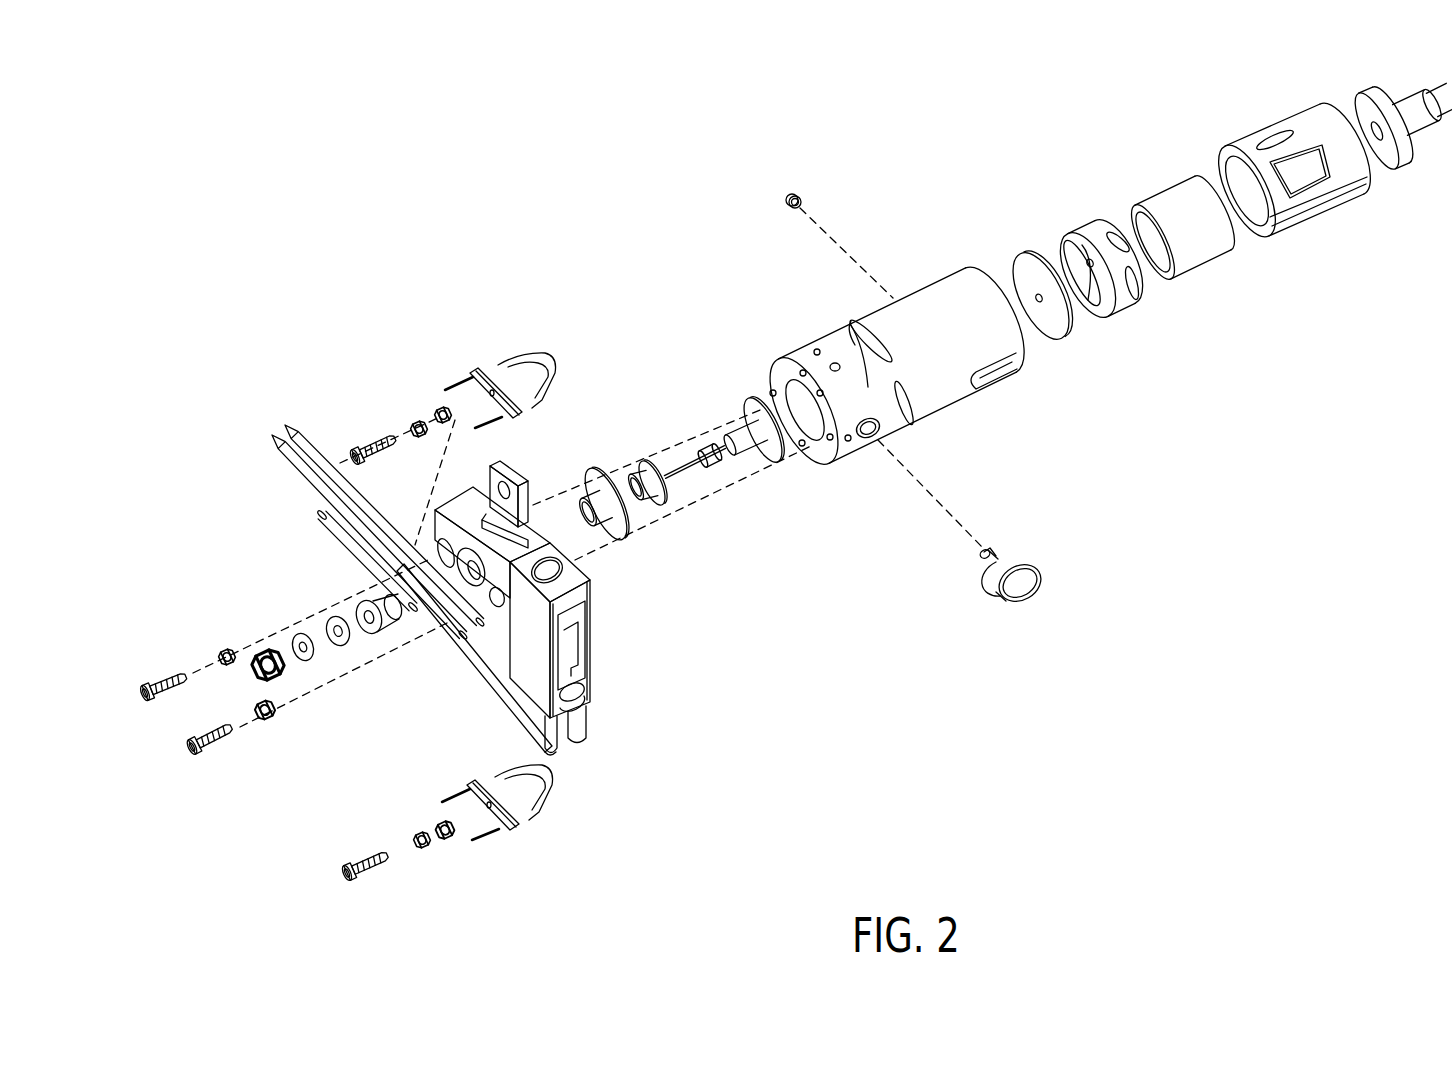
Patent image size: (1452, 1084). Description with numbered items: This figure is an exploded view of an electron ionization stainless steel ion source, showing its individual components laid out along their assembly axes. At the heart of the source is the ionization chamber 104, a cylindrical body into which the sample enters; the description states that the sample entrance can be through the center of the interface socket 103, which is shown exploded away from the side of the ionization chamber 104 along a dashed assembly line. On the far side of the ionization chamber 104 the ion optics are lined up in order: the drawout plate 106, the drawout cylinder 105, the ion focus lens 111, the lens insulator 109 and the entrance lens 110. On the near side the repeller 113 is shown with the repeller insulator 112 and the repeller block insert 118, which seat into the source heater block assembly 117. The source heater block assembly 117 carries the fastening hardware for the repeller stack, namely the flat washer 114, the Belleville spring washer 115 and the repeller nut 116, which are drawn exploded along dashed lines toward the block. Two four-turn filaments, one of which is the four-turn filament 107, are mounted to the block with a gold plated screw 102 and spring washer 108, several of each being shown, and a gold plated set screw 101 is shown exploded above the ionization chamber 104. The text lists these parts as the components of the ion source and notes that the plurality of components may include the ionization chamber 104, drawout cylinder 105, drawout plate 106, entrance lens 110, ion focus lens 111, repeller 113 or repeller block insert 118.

The gold plated set screw 101 is at (788, 198).
The gold plated screw 102 is at (360, 447).
The interface socket 103 is at (1000, 607).
The ionization chamber 104 is at (927, 290).
The drawout cylinder 105 is at (1090, 220).
The drawout plate 106 is at (1027, 255).
The four-turn filament 107 is at (493, 360).
The spring washer 108 is at (437, 410).
The lens insulator 109 is at (1290, 125).
The entrance lens 110 is at (1377, 93).
The ion focus lens 111 is at (1170, 187).
The repeller insulator 112 is at (643, 458).
The repeller 113 is at (760, 400).
The flat washer 114 is at (333, 617).
The Belleville spring washer 115 is at (297, 637).
The repeller nut 116 is at (260, 650).
The source heater block assembly 117 is at (447, 506).
The repeller block insert 118 is at (593, 473).